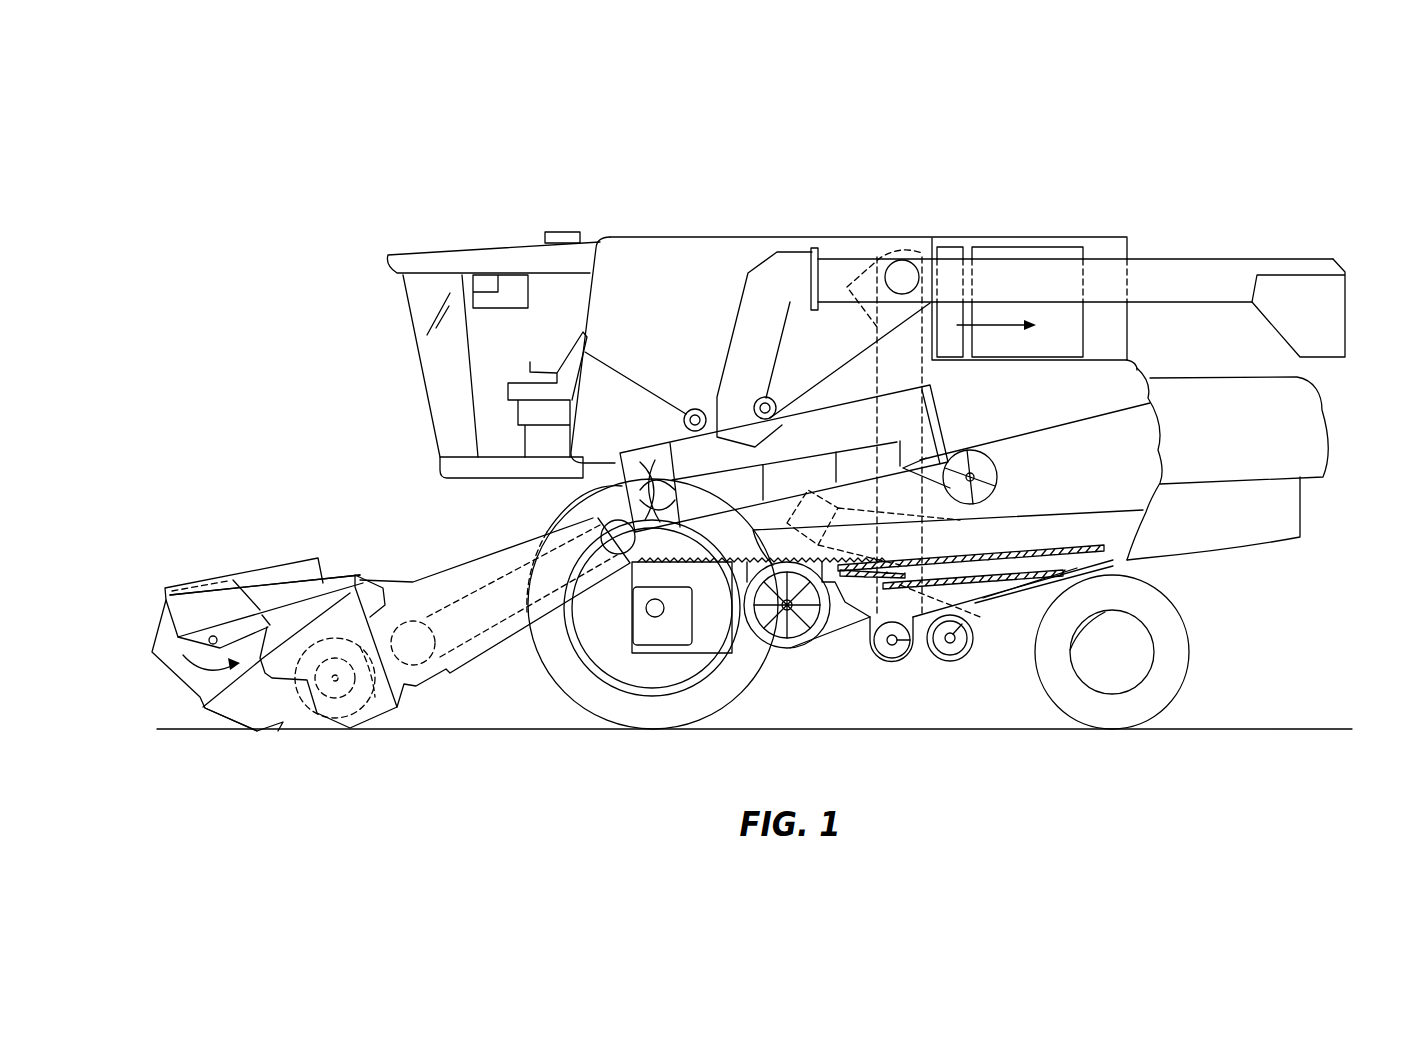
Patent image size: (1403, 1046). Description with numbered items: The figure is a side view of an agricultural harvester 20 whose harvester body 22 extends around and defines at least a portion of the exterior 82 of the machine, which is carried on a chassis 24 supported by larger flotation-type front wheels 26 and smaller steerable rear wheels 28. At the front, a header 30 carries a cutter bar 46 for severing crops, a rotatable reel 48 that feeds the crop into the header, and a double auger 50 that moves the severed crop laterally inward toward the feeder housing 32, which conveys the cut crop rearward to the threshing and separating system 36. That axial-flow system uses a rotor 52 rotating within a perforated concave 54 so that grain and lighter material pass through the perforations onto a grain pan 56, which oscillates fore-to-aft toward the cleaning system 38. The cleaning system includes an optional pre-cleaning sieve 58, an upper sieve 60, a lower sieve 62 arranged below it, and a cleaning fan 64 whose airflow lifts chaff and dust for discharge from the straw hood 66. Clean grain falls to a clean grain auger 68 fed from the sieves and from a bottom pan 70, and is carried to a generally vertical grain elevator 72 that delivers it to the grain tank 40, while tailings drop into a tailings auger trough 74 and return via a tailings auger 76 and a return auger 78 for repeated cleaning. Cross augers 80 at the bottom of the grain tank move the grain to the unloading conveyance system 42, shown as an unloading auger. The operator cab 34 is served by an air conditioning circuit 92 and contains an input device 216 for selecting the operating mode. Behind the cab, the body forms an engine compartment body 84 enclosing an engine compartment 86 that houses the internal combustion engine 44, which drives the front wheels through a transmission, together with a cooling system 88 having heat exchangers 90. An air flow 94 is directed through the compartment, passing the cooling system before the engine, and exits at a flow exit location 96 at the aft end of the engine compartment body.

The agricultural harvester 20 is at (445, 195).
The harvester body 22 is at (758, 198).
The chassis 24 is at (1127, 562).
The front wheels 26 is at (592, 697).
The rear wheels 28 is at (1183, 665).
The header 30 is at (234, 546).
The feeder housing 32 is at (458, 562).
The operator cab 34 is at (435, 357).
The threshing and separating system 36 is at (556, 500).
The cleaning system 38 is at (848, 662).
The grain tank 40 is at (650, 235).
The unloading conveyance system 42 is at (1175, 273).
The internal combustion engine 44 is at (1013, 247).
The cutter bar 46 is at (263, 731).
The rotatable reel 48 is at (160, 633).
The double auger 50 is at (345, 710).
The rotor 52 is at (653, 465).
The perforated concave 54 is at (831, 418).
The grain pan 56 is at (623, 570).
The pre-cleaning sieve 58 is at (927, 558).
The upper sieve 60 is at (1037, 552).
The lower sieve 62 is at (997, 588).
The cleaning fan 64 is at (792, 638).
The straw hood 66 is at (1320, 445).
The clean grain auger 68 is at (897, 660).
The bottom pan 70 is at (1023, 592).
The grain elevator 72 is at (923, 370).
The tailings auger trough 74 is at (1047, 593).
The tailings auger 76 is at (953, 661).
The return auger 78 is at (848, 530).
The cross augers 80 is at (698, 405).
The exterior 82 is at (795, 245).
The engine compartment body 84 is at (1087, 237).
The engine compartment 86 is at (1108, 245).
The cooling system 88 is at (952, 238).
The heat exchangers 90 is at (931, 238).
The air conditioning circuit 92 is at (558, 232).
The air flow 94 is at (1011, 325).
The flow exit location 96 is at (1127, 333).
The input device 216 is at (485, 283).